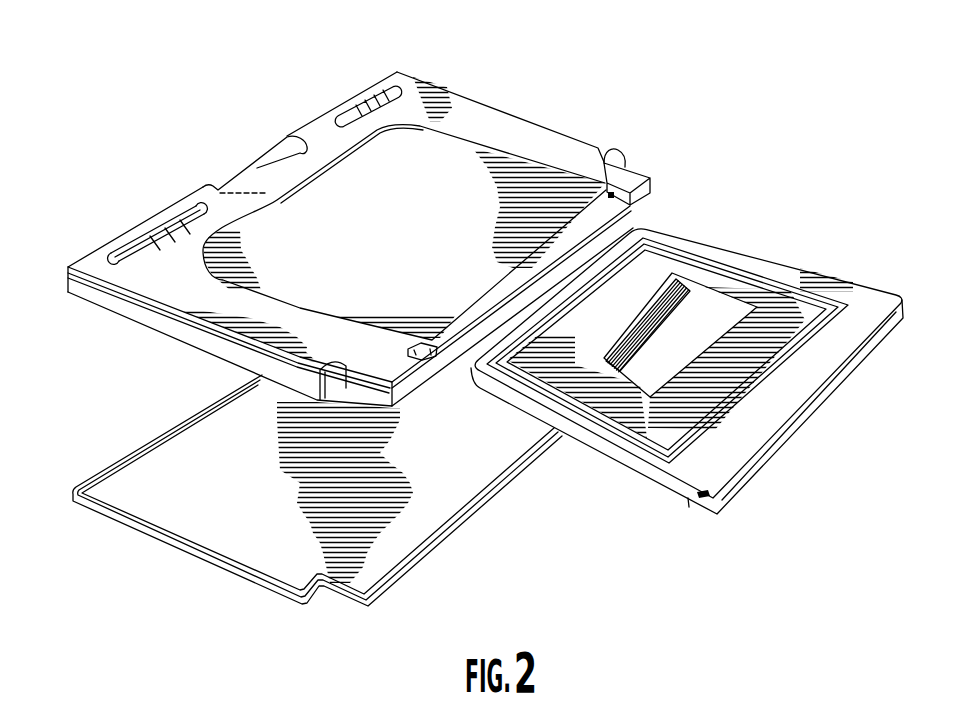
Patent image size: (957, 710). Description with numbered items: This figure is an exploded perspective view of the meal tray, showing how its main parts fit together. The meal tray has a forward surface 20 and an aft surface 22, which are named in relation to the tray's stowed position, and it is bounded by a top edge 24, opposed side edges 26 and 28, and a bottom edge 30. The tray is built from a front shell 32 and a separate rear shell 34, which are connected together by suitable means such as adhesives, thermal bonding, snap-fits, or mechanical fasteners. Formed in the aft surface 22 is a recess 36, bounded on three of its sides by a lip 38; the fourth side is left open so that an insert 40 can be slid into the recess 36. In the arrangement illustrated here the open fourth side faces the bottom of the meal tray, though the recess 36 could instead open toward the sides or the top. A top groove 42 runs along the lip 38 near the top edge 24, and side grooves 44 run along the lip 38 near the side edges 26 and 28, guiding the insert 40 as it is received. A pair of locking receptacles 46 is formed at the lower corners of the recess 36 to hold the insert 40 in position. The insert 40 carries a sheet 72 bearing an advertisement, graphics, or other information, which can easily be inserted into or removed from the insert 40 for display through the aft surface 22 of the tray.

The forward surface 20 is at (142, 488).
The aft surface 22 is at (480, 122).
The top edge 24 is at (100, 250).
The side edge 26 is at (158, 318).
The side edge 28 is at (553, 124).
The bottom edge 30 is at (643, 187).
The front shell 32 is at (92, 478).
The rear shell 34 is at (413, 76).
The recess 36 is at (371, 252).
The lip 38 is at (345, 112).
The insert 40 is at (778, 187).
The top groove 42 is at (270, 193).
The side grooves 44 is at (606, 158).
The locking receptacles 46 is at (620, 212).
The sheet 72 is at (647, 408).